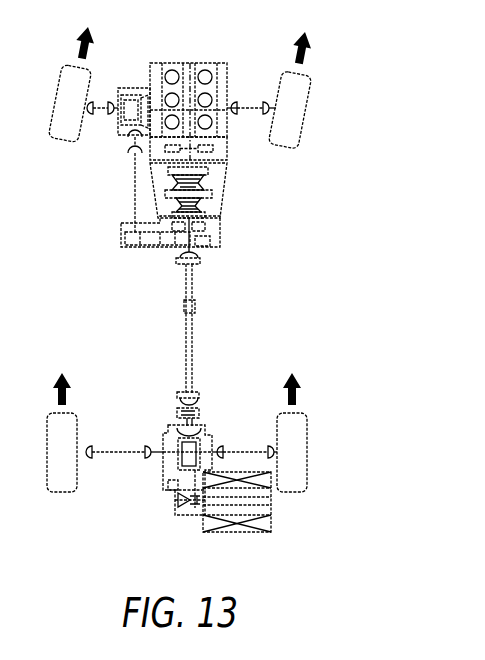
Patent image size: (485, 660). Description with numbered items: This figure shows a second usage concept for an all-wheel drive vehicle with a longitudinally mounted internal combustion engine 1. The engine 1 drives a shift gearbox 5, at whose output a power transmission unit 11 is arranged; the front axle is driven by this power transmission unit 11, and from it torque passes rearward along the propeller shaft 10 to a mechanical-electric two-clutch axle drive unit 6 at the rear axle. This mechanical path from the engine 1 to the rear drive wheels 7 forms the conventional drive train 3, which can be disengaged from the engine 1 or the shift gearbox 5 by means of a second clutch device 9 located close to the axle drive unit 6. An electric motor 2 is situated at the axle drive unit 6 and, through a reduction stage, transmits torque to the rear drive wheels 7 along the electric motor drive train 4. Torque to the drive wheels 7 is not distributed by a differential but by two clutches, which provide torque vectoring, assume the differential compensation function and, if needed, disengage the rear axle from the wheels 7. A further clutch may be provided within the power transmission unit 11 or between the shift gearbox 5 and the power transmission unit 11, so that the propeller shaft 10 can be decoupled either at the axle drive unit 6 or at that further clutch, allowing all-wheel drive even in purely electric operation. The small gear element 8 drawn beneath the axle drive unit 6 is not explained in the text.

The internal combustion engine 1 is at (213, 118).
The electric motor 2 is at (215, 527).
The conventional drive train 3 is at (148, 282).
The electric motor drive train 4 is at (153, 503).
The shift gearbox 5 is at (210, 186).
The axle drive unit 6 is at (176, 457).
The rear drive wheels 7 is at (57, 473).
The gear unit 8 is at (182, 510).
The second clutch device 9 is at (178, 410).
The propeller shaft 10 is at (186, 340).
The power transmission unit 11 is at (120, 223).